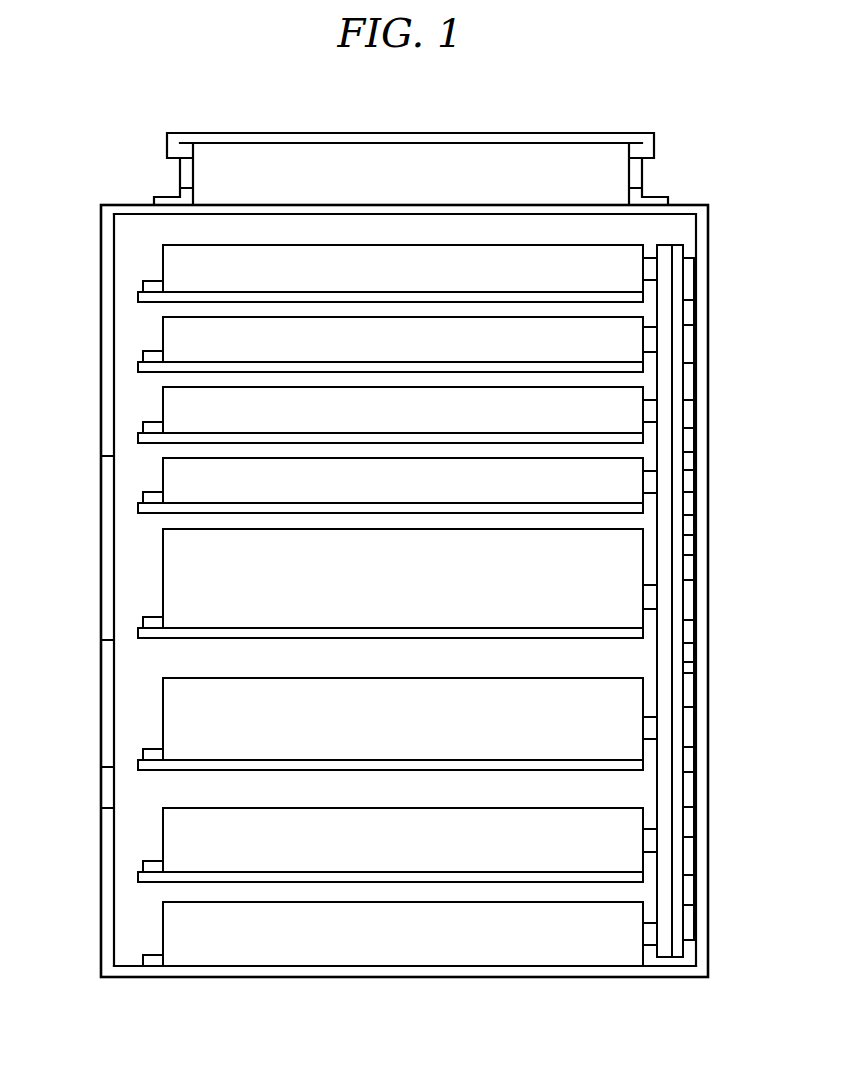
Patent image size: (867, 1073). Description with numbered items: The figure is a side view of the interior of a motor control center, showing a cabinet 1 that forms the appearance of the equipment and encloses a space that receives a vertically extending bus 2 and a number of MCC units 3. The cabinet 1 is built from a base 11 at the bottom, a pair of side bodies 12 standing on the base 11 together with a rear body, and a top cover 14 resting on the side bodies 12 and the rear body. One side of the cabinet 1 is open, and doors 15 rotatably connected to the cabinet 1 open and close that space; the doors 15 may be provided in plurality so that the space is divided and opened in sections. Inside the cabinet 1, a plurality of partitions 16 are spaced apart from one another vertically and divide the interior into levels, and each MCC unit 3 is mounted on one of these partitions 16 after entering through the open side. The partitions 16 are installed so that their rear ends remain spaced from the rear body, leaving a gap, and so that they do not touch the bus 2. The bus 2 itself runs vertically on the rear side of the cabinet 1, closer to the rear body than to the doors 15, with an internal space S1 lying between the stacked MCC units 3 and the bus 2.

The cabinet 1 is at (720, 165).
The bus 2 is at (678, 542).
The MCC unit 3 is at (140, 272).
The base 11 is at (670, 972).
The side body 12 is at (130, 906).
The top cover 14 is at (134, 208).
The door 15 is at (106, 226).
The partition 16 is at (140, 296).
The space between cells S1 is at (600, 658).